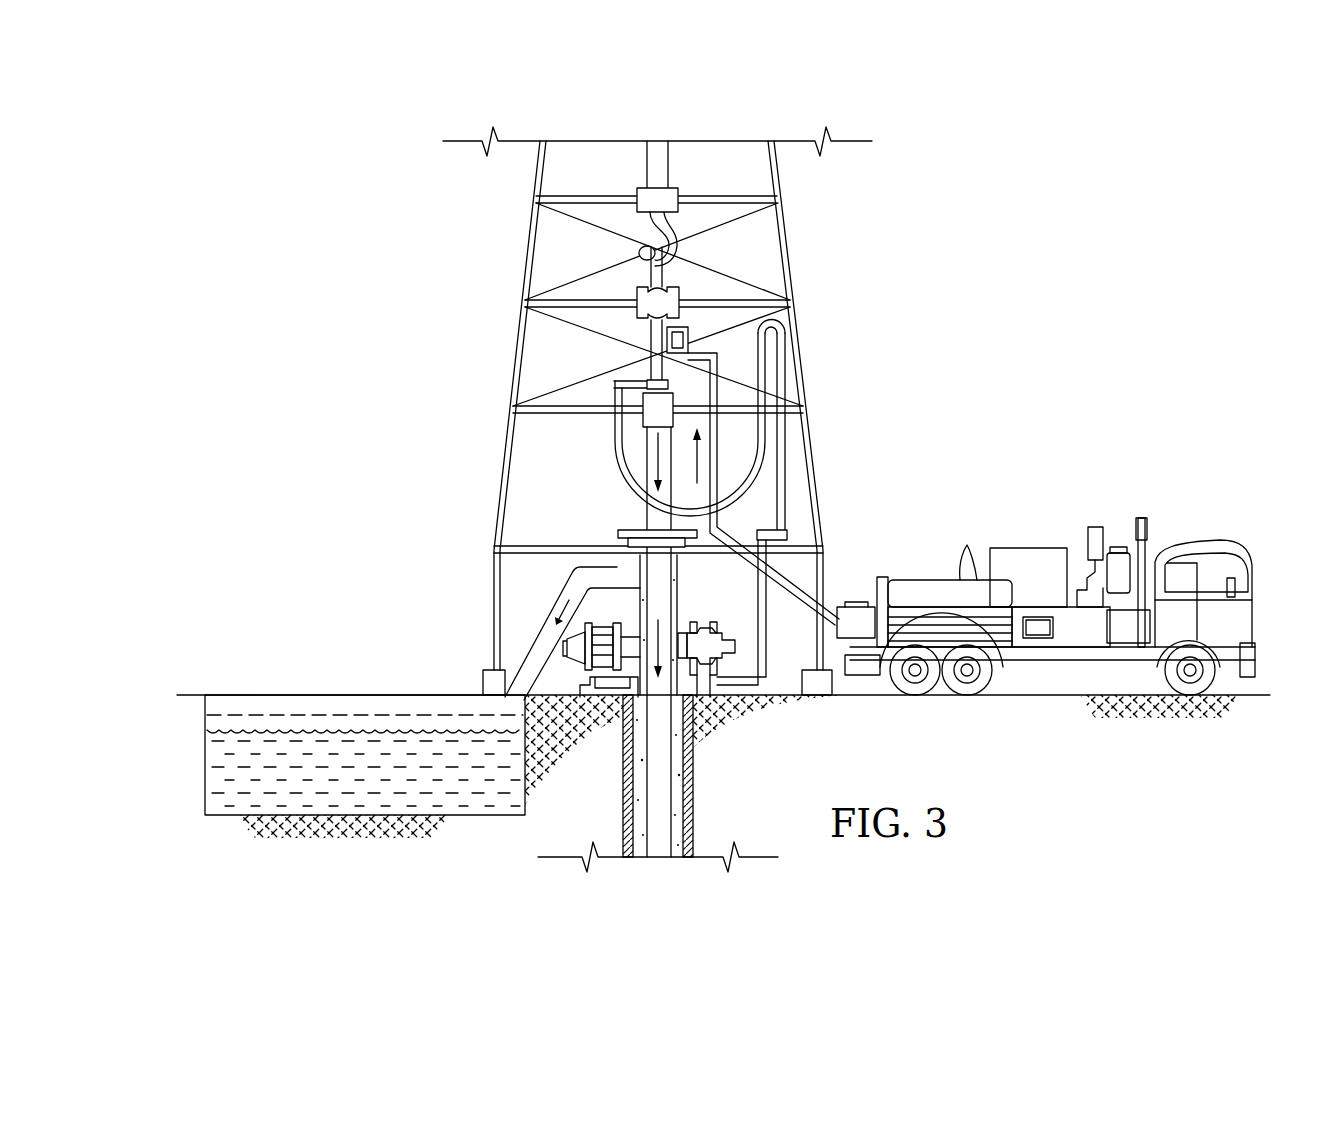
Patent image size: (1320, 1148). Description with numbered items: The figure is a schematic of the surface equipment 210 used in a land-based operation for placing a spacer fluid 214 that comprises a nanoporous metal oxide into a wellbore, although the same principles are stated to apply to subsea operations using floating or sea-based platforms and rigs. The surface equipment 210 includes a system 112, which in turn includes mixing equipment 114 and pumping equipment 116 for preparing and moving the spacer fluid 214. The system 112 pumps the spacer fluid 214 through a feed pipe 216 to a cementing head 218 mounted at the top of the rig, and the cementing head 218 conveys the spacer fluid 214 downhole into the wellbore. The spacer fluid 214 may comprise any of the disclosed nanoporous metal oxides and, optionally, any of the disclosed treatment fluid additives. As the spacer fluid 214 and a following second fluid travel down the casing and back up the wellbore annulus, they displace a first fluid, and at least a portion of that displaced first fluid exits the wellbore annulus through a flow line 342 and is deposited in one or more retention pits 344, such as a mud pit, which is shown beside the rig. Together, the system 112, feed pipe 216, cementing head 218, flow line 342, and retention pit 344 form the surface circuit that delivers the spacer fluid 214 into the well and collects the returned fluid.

The system 112 is at (1046, 624).
The mixing equipment 114 is at (1038, 630).
The pumping equipment 116 is at (856, 609).
The surface equipment 210 is at (1040, 327).
The spacer fluid 214 is at (654, 468).
The feed pipe 216 is at (792, 578).
The cementing head 218 is at (622, 288).
The flow line 342 is at (531, 649).
The retention pit 344 is at (205, 756).